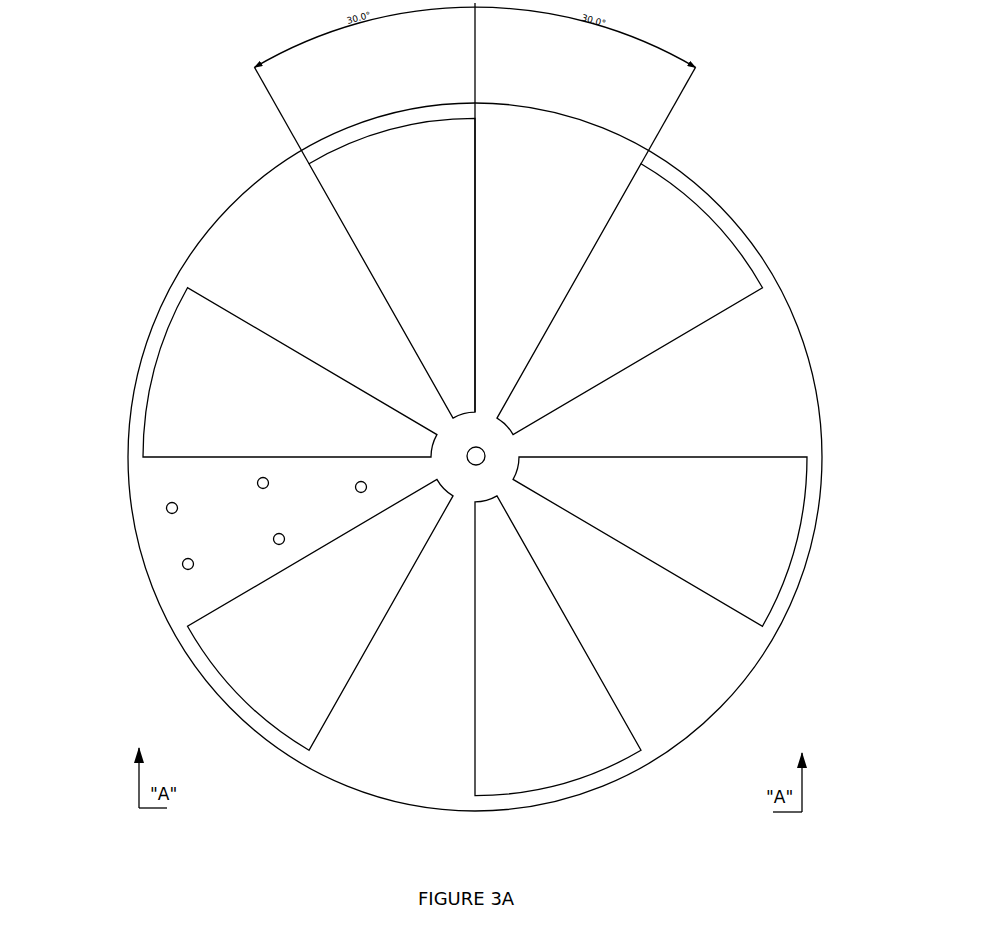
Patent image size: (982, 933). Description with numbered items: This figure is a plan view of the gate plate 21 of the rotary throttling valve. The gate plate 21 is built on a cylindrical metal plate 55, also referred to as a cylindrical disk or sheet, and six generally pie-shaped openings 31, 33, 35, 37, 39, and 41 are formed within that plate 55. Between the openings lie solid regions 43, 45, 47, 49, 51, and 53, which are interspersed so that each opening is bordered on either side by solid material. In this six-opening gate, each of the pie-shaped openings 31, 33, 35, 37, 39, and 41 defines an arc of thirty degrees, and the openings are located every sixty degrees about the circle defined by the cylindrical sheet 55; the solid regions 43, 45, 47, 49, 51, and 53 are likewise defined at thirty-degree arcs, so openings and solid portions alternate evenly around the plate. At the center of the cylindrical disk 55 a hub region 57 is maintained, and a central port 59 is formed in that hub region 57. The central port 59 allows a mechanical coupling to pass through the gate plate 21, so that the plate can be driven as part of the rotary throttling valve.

The gate plate 21 is at (475, 489).
The cylindrical metal plate 55 is at (317, 773).
The pie-shaped opening 31 is at (397, 198).
The pie-shaped opening 33 is at (676, 250).
The pie-shaped opening 35 is at (740, 532).
The pie-shaped opening 37 is at (545, 735).
The pie-shaped opening 39 is at (282, 648).
The pie-shaped opening 41 is at (207, 388).
The solid region 43 is at (551, 172).
The solid region 45 is at (752, 387).
The solid region 47 is at (681, 665).
The solid region 49 is at (397, 742).
The solid region 51 is at (190, 490).
The solid region 53 is at (263, 237).
The hub region 57 is at (501, 451).
The central port 59 is at (481, 465).